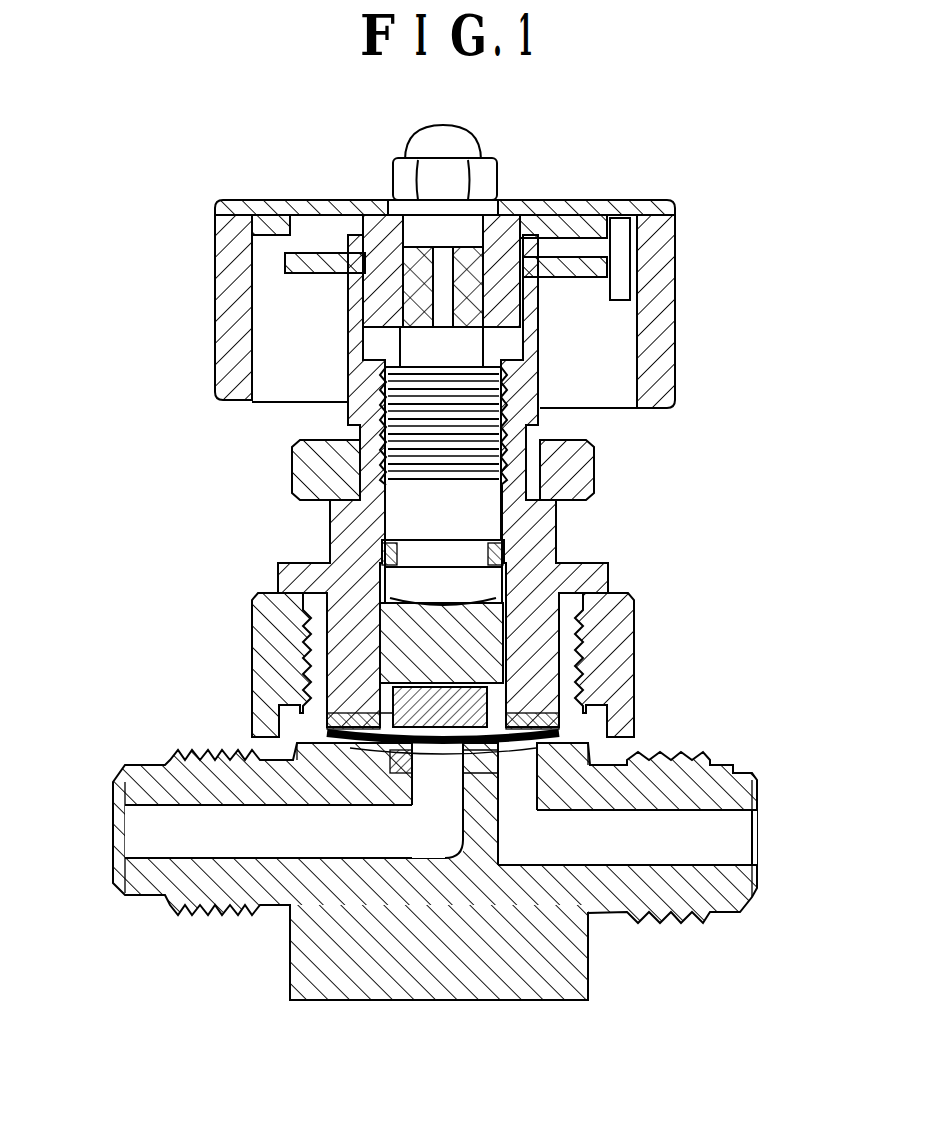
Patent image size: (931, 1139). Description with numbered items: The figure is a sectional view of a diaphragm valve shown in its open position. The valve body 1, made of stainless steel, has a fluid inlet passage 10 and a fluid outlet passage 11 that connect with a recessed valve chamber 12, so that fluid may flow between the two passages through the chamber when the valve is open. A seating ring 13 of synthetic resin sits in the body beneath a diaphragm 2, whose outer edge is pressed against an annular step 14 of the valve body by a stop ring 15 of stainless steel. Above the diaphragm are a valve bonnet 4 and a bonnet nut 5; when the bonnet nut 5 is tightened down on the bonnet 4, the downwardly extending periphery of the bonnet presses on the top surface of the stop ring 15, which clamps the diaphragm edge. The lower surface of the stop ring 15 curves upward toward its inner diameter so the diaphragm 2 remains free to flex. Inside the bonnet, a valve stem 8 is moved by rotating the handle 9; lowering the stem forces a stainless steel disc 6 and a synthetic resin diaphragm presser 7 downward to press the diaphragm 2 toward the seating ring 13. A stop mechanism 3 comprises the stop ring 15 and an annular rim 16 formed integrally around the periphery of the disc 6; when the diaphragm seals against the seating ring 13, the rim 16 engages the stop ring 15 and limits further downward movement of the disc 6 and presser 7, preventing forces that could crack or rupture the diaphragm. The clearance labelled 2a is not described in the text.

The valve body 1 is at (462, 940).
The diaphragm 2 is at (512, 750).
The clearance 2a is at (603, 703).
The stop mechanism 3 is at (193, 660).
The valve bonnet 4 is at (533, 590).
The bonnet nut 5 is at (610, 658).
The disc 6 is at (437, 603).
The diaphragm presser 7 is at (430, 658).
The valve stem 8 is at (425, 500).
The handle 9 is at (655, 340).
The fluid inlet passage 10 is at (152, 830).
The fluid outlet passage 11 is at (730, 840).
The recessed valve chamber 12 is at (368, 752).
The seating ring 13 is at (422, 750).
The annular step 14 is at (590, 752).
The stop ring 15 is at (302, 738).
The rim 16 is at (352, 684).